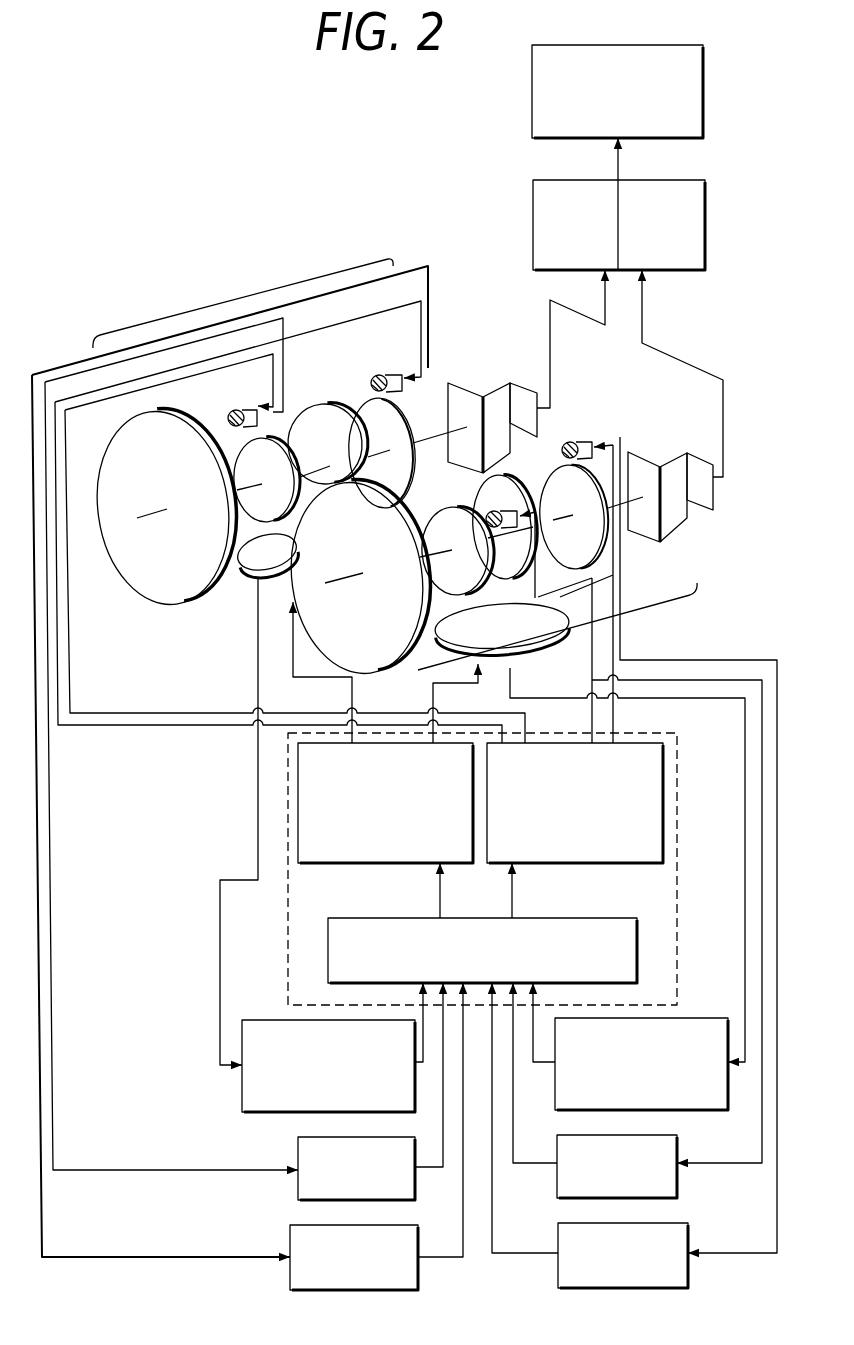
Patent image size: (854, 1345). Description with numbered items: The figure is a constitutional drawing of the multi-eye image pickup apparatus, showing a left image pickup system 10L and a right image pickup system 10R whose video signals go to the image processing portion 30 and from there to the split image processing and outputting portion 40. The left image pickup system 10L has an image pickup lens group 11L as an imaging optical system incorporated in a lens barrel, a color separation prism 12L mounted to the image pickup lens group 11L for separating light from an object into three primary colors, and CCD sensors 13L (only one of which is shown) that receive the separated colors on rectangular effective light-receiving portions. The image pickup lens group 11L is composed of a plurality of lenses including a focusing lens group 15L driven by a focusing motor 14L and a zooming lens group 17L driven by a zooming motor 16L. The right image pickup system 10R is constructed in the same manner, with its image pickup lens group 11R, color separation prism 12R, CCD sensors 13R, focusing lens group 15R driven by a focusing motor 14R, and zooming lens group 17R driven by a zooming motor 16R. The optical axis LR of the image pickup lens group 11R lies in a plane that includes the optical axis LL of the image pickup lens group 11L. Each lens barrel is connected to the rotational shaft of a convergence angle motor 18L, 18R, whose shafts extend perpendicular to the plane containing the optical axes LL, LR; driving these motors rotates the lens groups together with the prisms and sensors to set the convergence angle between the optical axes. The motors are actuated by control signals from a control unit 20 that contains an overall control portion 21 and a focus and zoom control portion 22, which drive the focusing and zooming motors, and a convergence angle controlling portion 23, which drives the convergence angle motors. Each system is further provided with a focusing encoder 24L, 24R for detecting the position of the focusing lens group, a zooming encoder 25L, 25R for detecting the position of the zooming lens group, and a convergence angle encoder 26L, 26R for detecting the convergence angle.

The right image pickup system 10R is at (273, 286).
The left image pickup system 10L is at (655, 606).
The image pickup lens group 11R is at (162, 538).
The image pickup lens group 11L is at (315, 587).
The optical axis LR is at (147, 515).
The optical axis LL is at (340, 580).
The color separation prism 12R is at (470, 380).
The color separation prism 12L is at (653, 453).
The CCD sensors 13R is at (522, 380).
The CCD sensors 13L is at (700, 453).
The focusing motor 14R is at (386, 368).
The focusing motor 14L is at (578, 440).
The focusing lens group 15R is at (368, 417).
The focusing lens group 15L is at (587, 538).
The zooming motor 16R is at (240, 398).
The zooming motor 16L is at (497, 508).
The zooming lens group 17R is at (248, 464).
The zooming lens group 17L is at (445, 596).
The convergence angle motor 18R is at (260, 552).
The convergence angle motor 18L is at (540, 650).
The control unit 20 is at (288, 915).
The overall control portion 21 is at (557, 917).
The focus and zoom control portion 22 is at (627, 863).
The convergence angle controlling portion 23 is at (340, 863).
The focusing encoder 24R is at (290, 1273).
The focusing encoder 24L is at (690, 1277).
The zooming encoder 25R is at (298, 1192).
The zooming encoder 25L is at (678, 1185).
The convergence angle encoder 26R is at (242, 1086).
The convergence angle encoder 26L is at (707, 1112).
The image processing portion 30 is at (708, 192).
The split image processing and outputting portion 40 is at (645, 43).